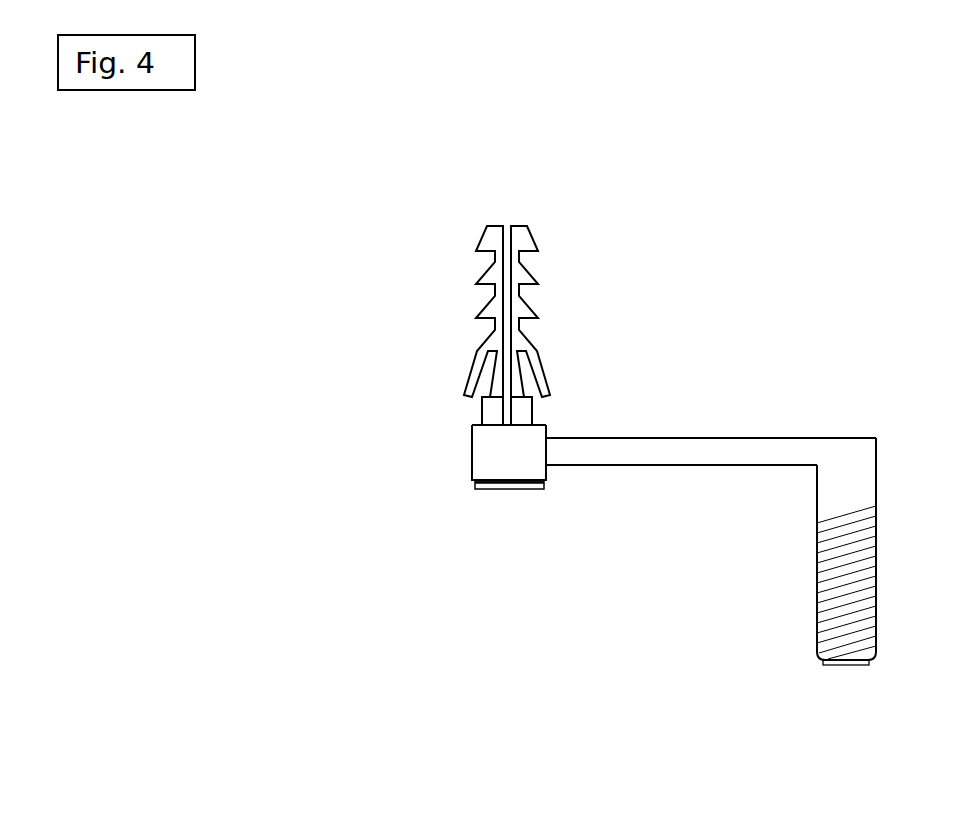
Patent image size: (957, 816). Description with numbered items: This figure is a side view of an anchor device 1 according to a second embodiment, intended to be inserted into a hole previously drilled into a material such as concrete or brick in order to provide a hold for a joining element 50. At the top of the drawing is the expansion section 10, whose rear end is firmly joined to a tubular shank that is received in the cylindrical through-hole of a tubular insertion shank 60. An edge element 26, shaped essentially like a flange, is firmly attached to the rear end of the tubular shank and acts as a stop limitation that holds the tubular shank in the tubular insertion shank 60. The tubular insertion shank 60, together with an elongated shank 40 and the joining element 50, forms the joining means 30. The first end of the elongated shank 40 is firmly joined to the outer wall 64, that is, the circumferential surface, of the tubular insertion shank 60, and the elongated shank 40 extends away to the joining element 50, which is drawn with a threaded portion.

The anchor device 1 is at (818, 177).
The expansion section 10 is at (548, 217).
The edge element 26 is at (508, 487).
The joining means 30 is at (827, 396).
The elongated shank 40 is at (682, 455).
The joining element 50 is at (823, 635).
The tubular insertion shank 60 is at (503, 452).
The outer wall 64 is at (535, 438).